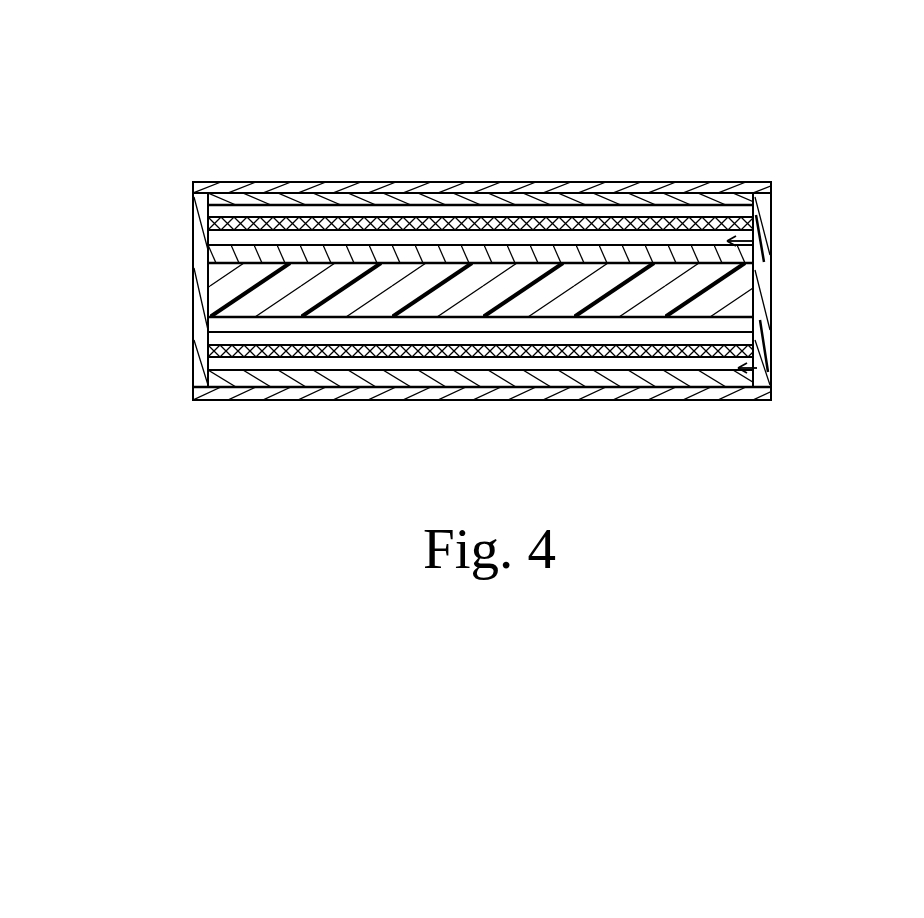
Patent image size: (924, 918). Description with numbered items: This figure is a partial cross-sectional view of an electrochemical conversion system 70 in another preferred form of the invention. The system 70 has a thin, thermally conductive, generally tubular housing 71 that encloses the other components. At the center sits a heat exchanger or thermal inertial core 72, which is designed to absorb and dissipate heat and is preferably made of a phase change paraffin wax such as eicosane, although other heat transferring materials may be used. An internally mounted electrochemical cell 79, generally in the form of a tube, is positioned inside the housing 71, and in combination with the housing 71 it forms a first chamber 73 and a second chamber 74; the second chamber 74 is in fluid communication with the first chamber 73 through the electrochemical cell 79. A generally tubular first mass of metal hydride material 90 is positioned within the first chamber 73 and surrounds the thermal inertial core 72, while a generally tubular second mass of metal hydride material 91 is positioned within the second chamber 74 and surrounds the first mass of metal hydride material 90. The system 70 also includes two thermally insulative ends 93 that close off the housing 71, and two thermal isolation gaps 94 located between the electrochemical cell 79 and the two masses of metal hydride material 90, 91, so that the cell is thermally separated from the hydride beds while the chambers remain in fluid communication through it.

The electrochemical conversion system 70 is at (630, 87).
The housing 71 is at (720, 182).
The thermal inertial core 72 is at (740, 292).
The first chamber 73 is at (772, 237).
The second chamber 74 is at (773, 367).
The electrochemical cell 79 is at (720, 383).
The first mass of metal hydride material 90 is at (240, 251).
The second mass of metal hydride material 91 is at (251, 193).
The thermally insulative ends 93 is at (210, 330).
The thermal isolation gaps 94 is at (243, 207).